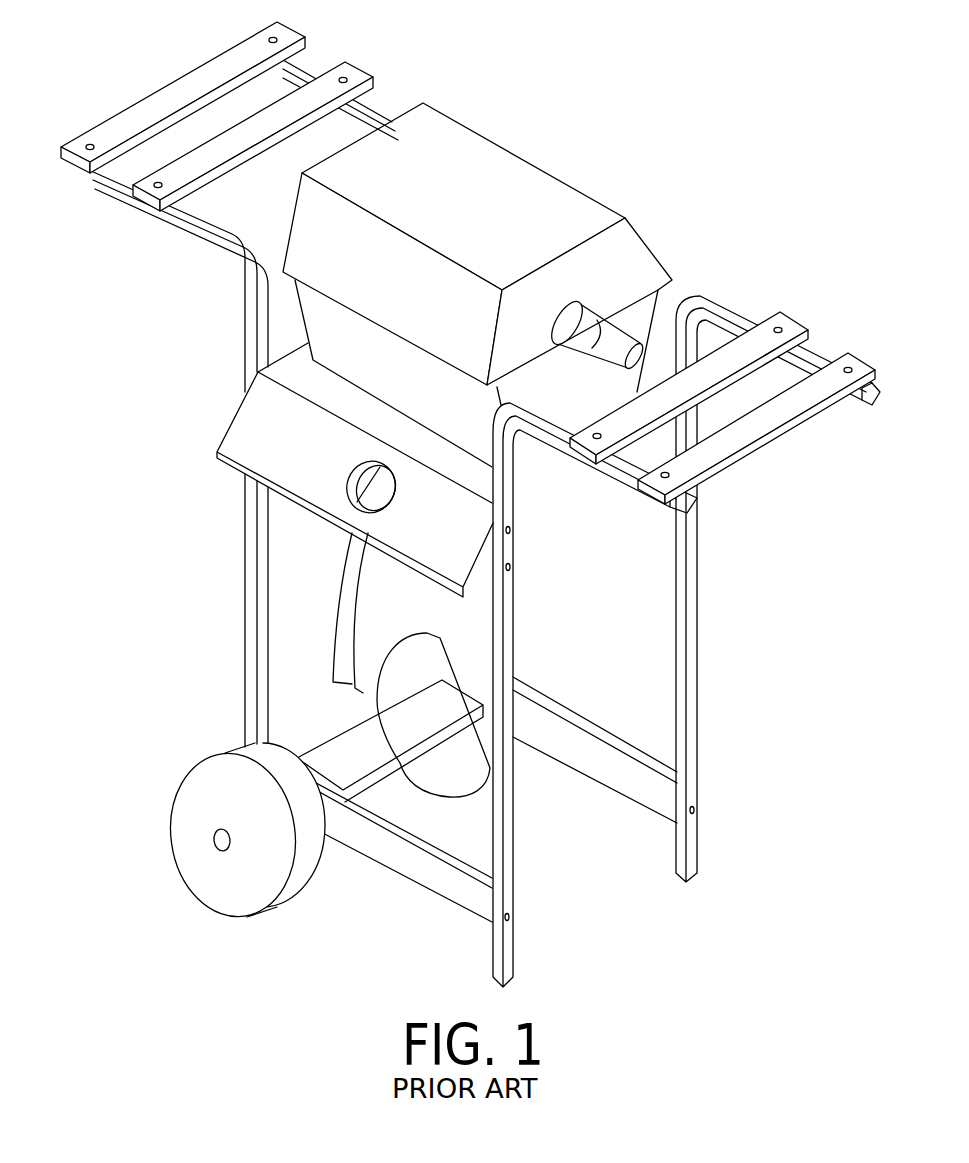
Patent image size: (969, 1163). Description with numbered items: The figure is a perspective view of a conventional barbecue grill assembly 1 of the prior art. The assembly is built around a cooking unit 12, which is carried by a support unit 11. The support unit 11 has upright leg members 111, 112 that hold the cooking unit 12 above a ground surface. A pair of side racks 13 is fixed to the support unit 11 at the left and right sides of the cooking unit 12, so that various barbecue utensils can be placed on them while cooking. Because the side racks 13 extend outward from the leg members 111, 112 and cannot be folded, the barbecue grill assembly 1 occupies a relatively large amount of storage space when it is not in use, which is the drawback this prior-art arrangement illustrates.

The barbecue grill assembly 1 is at (470, 512).
The support unit 11 is at (485, 538).
The upright leg member 111 is at (697, 683).
The upright leg member 112 is at (250, 687).
The cooking unit 12 is at (518, 153).
The side rack 13 is at (165, 105).